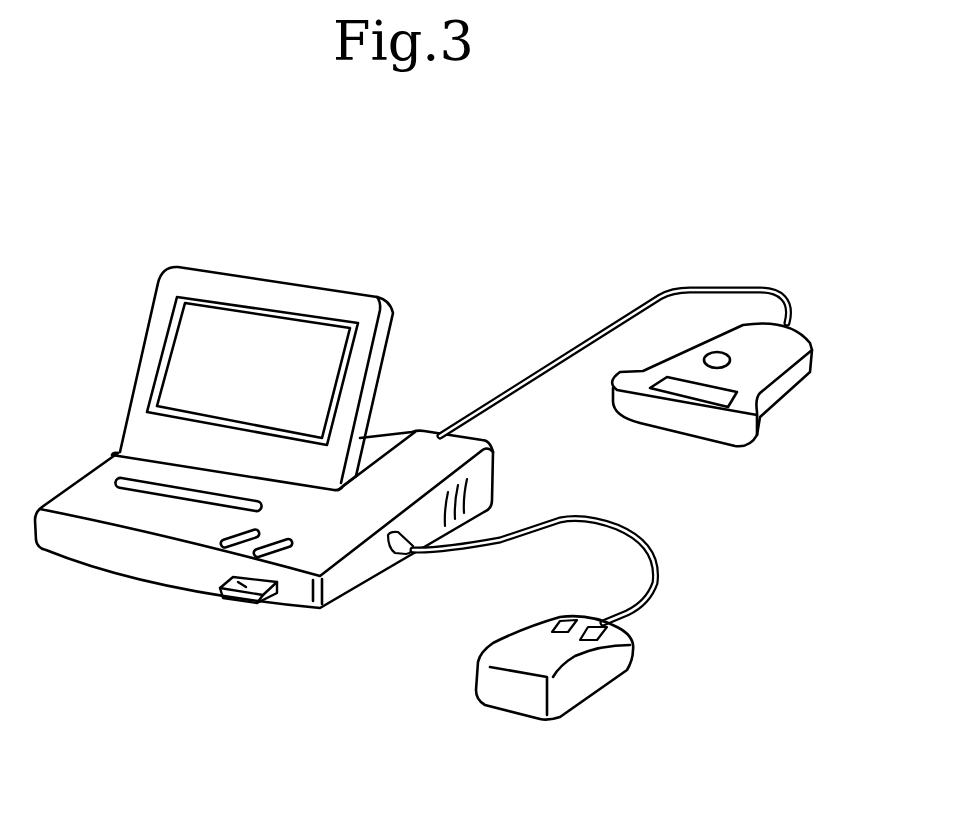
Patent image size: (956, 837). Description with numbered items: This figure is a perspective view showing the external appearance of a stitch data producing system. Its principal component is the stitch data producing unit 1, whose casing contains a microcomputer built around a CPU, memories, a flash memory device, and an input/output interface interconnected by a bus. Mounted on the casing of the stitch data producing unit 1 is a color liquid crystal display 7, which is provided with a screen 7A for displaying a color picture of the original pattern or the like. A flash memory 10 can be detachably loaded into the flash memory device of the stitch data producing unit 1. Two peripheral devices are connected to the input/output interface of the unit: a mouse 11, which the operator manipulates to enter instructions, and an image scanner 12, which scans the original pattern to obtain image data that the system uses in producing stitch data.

The stitch data producing unit 1 is at (264, 421).
The color liquid crystal display 7 is at (252, 322).
The screen 7A is at (245, 327).
The flash memory 10 is at (231, 595).
The mouse 11 is at (603, 672).
The image scanner 12 is at (783, 390).